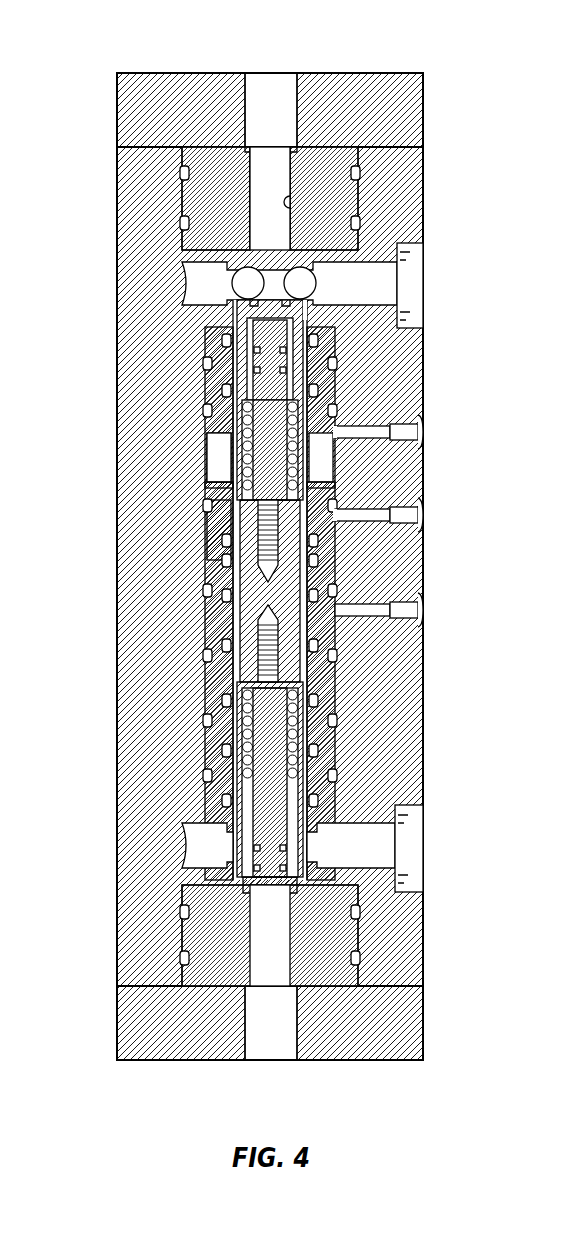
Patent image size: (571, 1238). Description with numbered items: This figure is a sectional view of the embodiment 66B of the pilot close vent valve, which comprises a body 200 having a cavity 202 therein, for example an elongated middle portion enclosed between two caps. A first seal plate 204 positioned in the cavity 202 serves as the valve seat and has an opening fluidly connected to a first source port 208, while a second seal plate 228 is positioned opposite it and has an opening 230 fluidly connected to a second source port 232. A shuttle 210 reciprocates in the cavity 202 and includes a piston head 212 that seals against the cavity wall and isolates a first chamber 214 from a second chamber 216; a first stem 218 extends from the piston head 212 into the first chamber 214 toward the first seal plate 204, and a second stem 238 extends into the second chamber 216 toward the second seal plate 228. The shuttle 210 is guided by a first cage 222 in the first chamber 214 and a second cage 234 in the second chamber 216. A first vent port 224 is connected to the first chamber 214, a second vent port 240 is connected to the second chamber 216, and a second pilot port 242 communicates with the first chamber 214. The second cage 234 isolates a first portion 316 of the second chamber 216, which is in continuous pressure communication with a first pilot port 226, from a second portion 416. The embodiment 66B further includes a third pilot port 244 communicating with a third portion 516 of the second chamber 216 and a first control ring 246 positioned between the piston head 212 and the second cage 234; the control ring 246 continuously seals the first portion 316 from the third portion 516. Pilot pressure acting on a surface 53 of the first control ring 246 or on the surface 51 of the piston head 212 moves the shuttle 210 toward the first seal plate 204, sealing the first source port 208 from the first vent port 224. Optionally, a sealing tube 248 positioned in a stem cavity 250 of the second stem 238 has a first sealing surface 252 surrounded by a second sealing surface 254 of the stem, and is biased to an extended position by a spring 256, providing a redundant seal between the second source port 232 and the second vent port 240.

The pilot close vent valve embodiment 66B is at (378, 44).
The body 200 is at (128, 545).
The cavity 202 is at (210, 620).
The first seal plate 204 is at (200, 940).
The first source port 208 is at (268, 1062).
The shuttle 210 is at (240, 660).
The piston head 212 is at (218, 570).
The first chamber 214 is at (200, 845).
The second chamber 216 is at (204, 382).
The first stem 218 is at (255, 825).
The first cage 222 is at (345, 822).
The first vent port 224 is at (424, 830).
The first pilot port 226 is at (424, 507).
The second seal plate 228 is at (215, 165).
The opening 230 is at (290, 202).
The second source port 232 is at (268, 72).
The second cage 234 is at (335, 425).
The second stem 238 is at (255, 443).
The second vent port 240 is at (424, 290).
The second pilot port 242 is at (424, 605).
The third pilot port 244 is at (424, 415).
The first control ring 246 is at (330, 545).
The sealing tube 248 is at (245, 360).
The stem cavity 250 is at (333, 375).
The first sealing surface 252 is at (302, 290).
The second sealing surface 254 is at (312, 310).
The spring 256 is at (244, 470).
The surface of the piston head 51 is at (217, 558).
The surface of the first control ring 53 is at (226, 478).
The first portion of the second chamber 316 is at (210, 552).
The second portion of the second chamber 416 is at (182, 262).
The third portion of the second chamber 516 is at (217, 455).